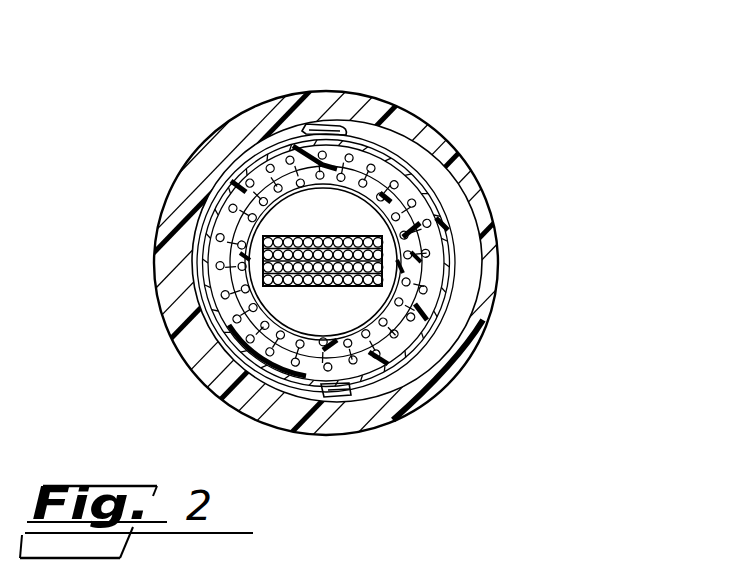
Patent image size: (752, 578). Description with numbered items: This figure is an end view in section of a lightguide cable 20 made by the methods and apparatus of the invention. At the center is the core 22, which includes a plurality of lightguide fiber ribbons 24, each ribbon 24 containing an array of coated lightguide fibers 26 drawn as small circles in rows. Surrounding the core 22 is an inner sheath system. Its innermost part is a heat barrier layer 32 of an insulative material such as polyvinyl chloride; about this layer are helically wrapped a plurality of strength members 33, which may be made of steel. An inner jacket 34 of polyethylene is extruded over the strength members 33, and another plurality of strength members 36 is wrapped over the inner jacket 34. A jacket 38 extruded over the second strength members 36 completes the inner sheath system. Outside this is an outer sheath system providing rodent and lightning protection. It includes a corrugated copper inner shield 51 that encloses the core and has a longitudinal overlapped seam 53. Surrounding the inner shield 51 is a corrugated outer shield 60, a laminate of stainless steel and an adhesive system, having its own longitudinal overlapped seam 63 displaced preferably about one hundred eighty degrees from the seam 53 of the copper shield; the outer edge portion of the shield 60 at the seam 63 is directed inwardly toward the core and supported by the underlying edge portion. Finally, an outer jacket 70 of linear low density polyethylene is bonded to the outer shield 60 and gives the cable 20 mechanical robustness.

The lightguide cable 20 is at (457, 116).
The core 22 is at (358, 220).
The lightguide fiber ribbon 24 is at (383, 257).
The coated lightguide fiber 26 is at (297, 238).
The heat barrier layer 32 is at (288, 190).
The strength members 33 is at (413, 270).
The inner jacket 34 is at (375, 183).
The strength members 36 is at (428, 327).
The jacket 38 is at (430, 295).
The inner shield 51 is at (293, 385).
The longitudinal overlapped seam 53 is at (345, 388).
The outer shield 60 is at (357, 120).
The longitudinal overlapped seam 63 is at (323, 121).
The jacket 70 is at (172, 310).